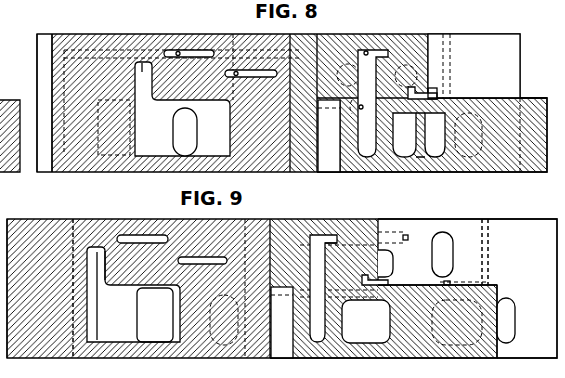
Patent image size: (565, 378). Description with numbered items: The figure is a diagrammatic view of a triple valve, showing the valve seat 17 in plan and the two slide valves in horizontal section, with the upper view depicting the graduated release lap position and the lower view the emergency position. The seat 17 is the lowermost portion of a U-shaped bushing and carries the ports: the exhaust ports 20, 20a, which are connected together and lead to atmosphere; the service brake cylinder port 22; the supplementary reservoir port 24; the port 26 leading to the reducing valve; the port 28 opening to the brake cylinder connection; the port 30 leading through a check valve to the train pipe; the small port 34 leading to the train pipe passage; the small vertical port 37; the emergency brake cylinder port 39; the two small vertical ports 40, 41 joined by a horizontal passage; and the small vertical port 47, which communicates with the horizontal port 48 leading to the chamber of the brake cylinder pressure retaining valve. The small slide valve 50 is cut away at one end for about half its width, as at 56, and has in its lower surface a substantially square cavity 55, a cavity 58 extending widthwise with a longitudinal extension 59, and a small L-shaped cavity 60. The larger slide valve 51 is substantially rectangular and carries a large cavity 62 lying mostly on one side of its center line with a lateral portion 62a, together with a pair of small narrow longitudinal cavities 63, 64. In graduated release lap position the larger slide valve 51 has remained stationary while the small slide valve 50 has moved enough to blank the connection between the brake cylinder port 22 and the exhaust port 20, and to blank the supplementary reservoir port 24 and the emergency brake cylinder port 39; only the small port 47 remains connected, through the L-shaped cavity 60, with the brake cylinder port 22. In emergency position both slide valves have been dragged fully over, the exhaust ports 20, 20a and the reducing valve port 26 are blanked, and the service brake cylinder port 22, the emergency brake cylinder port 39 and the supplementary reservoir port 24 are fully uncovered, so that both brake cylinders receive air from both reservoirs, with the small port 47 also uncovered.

In FIG. 8, the valve seat 17 is at (474, 66).
In FIG. 9, the valve seat 17 is at (467, 288).
In FIG. 8, the exhaust port 20 is at (405, 148).
In FIG. 8, the exhaust port 20a is at (437, 150).
In FIG. 9, the service brake cylinder port 22 is at (446, 240).
In FIG. 9, the supplementary reservoir port 24 is at (392, 264).
In FIG. 8, the reducing valve port 26 is at (189, 136).
In FIG. 9, the port 28 is at (158, 335).
In FIG. 9, the port 30 is at (97, 335).
In FIG. 8, the small port 34 is at (180, 52).
In FIG. 8, the small vertical port 37 is at (370, 52).
In FIG. 9, the small vertical port 37 is at (409, 237).
In FIG. 9, the emergency brake cylinder port 39 is at (510, 315).
In FIG. 8, the small vertical port 40 is at (236, 72).
In FIG. 8, the small vertical port 41 is at (358, 108).
In FIG. 8, the small vertical port 47 is at (430, 92).
In FIG. 9, the small vertical port 47 is at (449, 283).
In FIG. 9, the horizontal port 48 is at (489, 252).
In FIG. 8, the small slide valve 50 is at (530, 160).
In FIG. 9, the small slide valve 50 is at (495, 345).
In FIG. 8, the slide valve 51 is at (78, 24).
In FIG. 9, the slide valve 51 is at (63, 232).
In FIG. 8, the square cavity 55 is at (421, 150).
In FIG. 9, the square cavity 55 is at (366, 321).
In FIG. 8, the cut-away portion 56 is at (340, 148).
In FIG. 9, the cut-away portion 56 is at (293, 305).
In FIG. 8, the cavity 58 is at (366, 50).
In FIG. 9, the cavity 58 is at (320, 236).
In FIG. 8, the longitudinal extension 59 is at (363, 105).
In FIG. 9, the longitudinal extension 59 is at (333, 240).
In FIG. 8, the L-shaped cavity 60 is at (414, 93).
In FIG. 9, the L-shaped cavity 60 is at (380, 283).
In FIG. 8, the large cavity 62 is at (182, 109).
In FIG. 9, the large cavity 62 is at (133, 294).
In FIG. 8, the lateral portion 62a is at (137, 61).
In FIG. 9, the lateral portion 62a is at (104, 262).
In FIG. 8, the small narrow cavity 63 is at (170, 50).
In FIG. 9, the small narrow cavity 63 is at (125, 238).
In FIG. 8, the small narrow cavity 64 is at (258, 72).
In FIG. 9, the small narrow cavity 64 is at (185, 258).